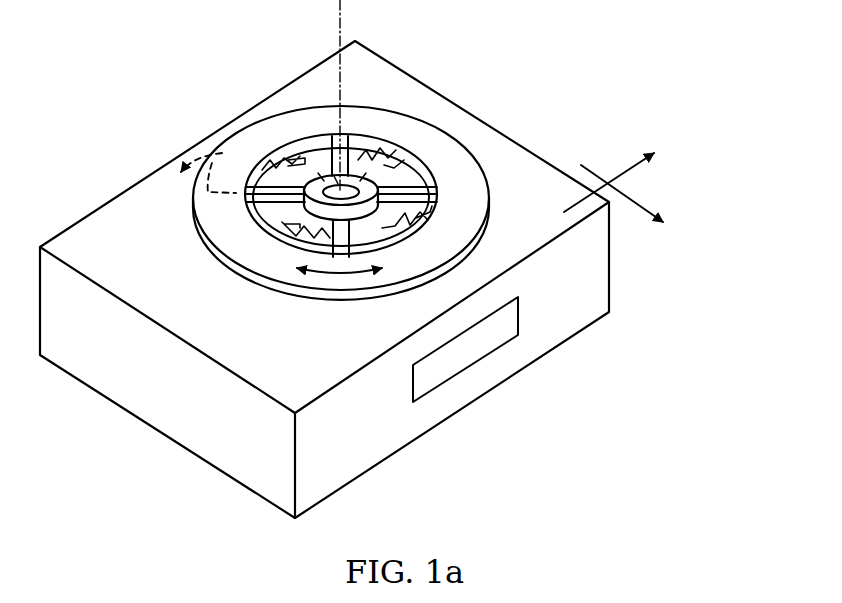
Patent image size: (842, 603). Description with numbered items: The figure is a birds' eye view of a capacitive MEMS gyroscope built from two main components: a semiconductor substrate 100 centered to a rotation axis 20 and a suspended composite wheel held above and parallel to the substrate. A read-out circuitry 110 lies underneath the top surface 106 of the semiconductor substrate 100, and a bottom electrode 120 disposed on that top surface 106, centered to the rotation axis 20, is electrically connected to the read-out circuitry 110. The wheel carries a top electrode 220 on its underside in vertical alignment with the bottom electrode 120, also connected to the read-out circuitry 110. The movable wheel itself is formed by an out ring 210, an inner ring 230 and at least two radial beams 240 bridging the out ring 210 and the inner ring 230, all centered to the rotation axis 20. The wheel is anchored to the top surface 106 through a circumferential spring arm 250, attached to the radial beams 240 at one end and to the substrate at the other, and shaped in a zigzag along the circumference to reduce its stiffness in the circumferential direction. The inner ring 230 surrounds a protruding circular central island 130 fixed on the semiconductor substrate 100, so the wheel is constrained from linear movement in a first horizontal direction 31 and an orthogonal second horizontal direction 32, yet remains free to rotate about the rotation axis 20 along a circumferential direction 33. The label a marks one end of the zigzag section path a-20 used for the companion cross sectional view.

The rotation axis 20 is at (330, 15).
The first horizontal direction 31 is at (621, 172).
The second horizontal direction 32 is at (650, 197).
The circumferential direction 33 is at (350, 270).
The zigzag path a is at (200, 184).
The semiconductor substrate 100 is at (376, 447).
The top surface 106 is at (83, 249).
The read-out circuitry 110 is at (453, 361).
The bottom electrode 120 is at (192, 249).
The protruding circular central island 130 is at (349, 178).
The out ring 210 is at (473, 200).
The top electrode 220 is at (189, 227).
The inner ring 230 is at (375, 175).
The radial beams 240 is at (428, 181).
The circumferential spring arm 250 is at (274, 156).